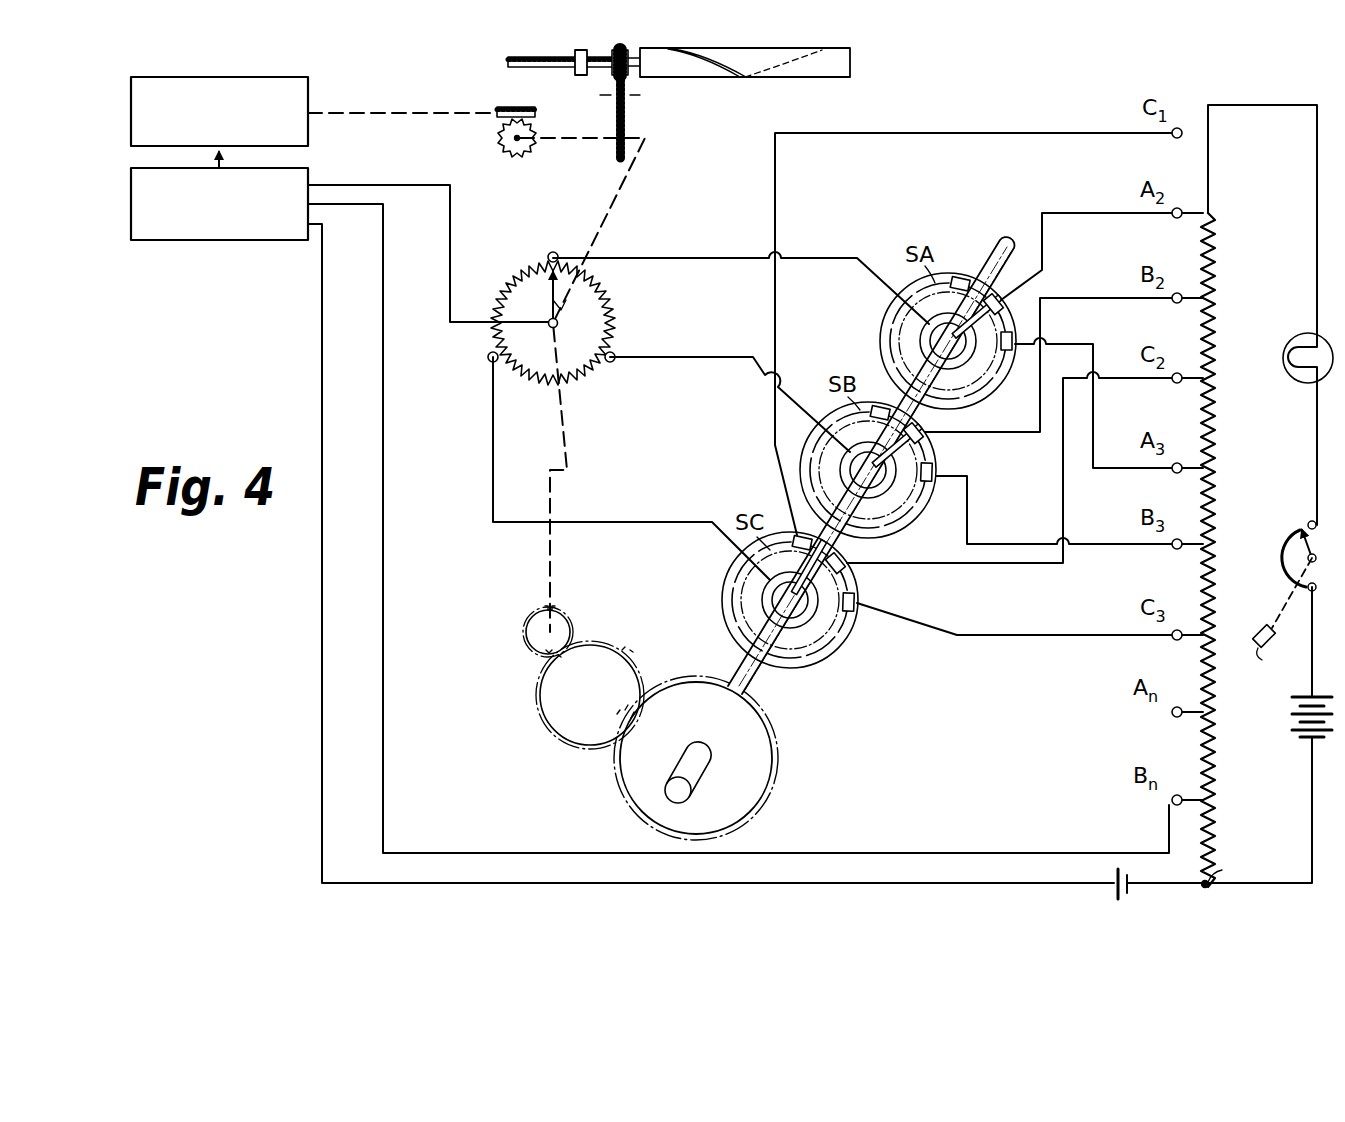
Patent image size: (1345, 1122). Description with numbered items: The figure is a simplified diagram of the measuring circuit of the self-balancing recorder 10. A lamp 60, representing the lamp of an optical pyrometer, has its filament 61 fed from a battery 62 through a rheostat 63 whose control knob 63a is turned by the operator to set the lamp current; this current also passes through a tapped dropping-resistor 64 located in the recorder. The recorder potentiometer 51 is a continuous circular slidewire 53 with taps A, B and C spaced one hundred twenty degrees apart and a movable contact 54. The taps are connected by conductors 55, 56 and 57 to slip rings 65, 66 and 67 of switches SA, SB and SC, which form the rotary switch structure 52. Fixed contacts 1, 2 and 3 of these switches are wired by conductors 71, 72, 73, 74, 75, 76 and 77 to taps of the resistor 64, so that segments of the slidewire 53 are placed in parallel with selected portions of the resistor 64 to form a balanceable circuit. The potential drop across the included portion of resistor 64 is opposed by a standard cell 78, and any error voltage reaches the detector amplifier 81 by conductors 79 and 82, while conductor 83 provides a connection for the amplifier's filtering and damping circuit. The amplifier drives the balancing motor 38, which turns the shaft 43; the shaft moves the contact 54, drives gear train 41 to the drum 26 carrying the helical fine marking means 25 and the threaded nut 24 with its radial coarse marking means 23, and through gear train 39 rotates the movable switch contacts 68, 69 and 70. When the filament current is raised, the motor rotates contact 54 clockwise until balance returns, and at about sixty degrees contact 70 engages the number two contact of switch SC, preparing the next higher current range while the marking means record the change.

The fixed contact 1 is at (963, 272).
The fixed contact 2 is at (1003, 290).
The fixed contact 3 is at (1008, 352).
The recorder 10 is at (758, 137).
The coarse marking means 23 is at (574, 50).
The threaded nut 24 is at (578, 75).
The fine marking means 25 is at (726, 77).
The drum 26 is at (818, 77).
The balancing motor 38 is at (268, 77).
The gear train 39 is at (468, 705).
The gear train 41 is at (633, 88).
The shaft 43 is at (612, 193).
The potentiometer 51 is at (658, 308).
The rotary switch structure 52 is at (830, 340).
The continuous circular slidewire 53 is at (582, 373).
The movable contact 54 is at (570, 307).
The conductor 55 is at (716, 258).
The conductor 56 is at (724, 357).
The conductor 57 is at (652, 522).
The lamp 60 is at (1296, 372).
The filament 61 is at (1296, 345).
The battery 62 is at (1295, 728).
The rheostat 63 is at (1280, 552).
The control knob 63a is at (1272, 621).
The dropping-resistor 64 is at (1222, 265).
The slip ring 65 is at (925, 322).
The slip ring 66 is at (840, 452).
The slip ring 67 is at (740, 628).
The movable switch contact 68 is at (970, 375).
The movable switch contact 69 is at (905, 512).
The movable switch contact 70 is at (745, 590).
The conductor 71 is at (1020, 133).
The conductor 72 is at (1106, 213).
The conductor 73 is at (1106, 298).
The conductor 74 is at (1108, 380).
The conductor 75 is at (1125, 470).
The conductor 76 is at (1090, 548).
The conductor 77 is at (1078, 635).
The standard cell 78 is at (1110, 898).
The conductor 79 is at (960, 893).
The detector amplifier 81 is at (128, 226).
The conductor 82 is at (452, 190).
The conductor 83 is at (928, 855).